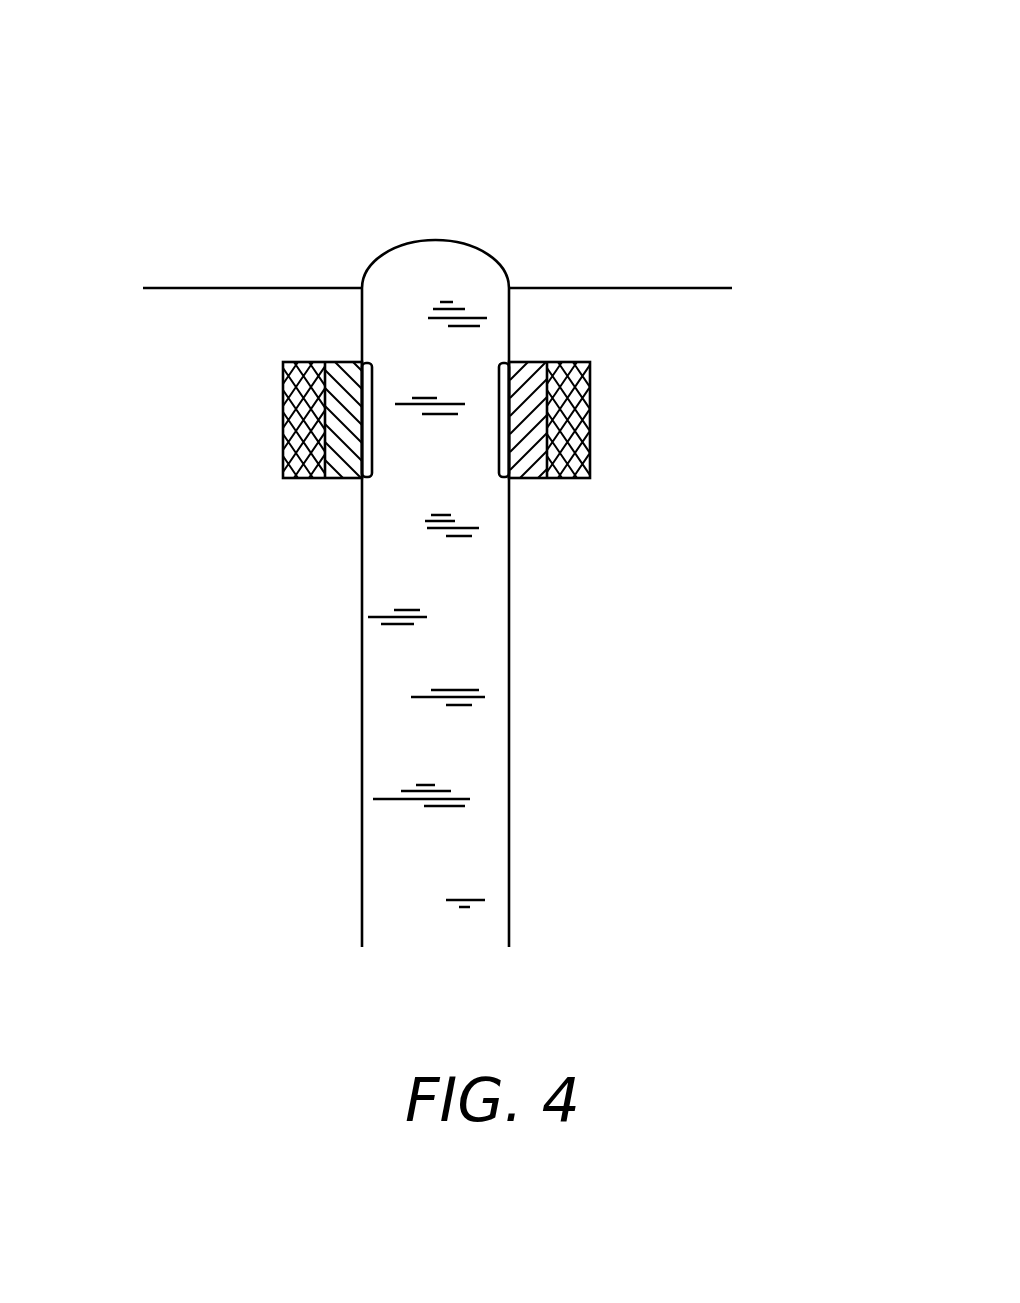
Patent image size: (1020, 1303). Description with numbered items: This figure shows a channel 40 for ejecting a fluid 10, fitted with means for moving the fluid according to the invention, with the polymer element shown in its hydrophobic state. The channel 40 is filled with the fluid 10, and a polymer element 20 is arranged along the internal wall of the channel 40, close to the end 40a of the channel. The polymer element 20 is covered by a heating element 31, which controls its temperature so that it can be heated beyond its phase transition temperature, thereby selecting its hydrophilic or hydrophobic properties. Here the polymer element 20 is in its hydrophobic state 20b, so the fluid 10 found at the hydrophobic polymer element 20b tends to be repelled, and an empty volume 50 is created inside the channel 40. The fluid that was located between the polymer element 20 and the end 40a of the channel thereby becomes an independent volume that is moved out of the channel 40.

The fluid 10 is at (408, 258).
The polymer element 20 is at (216, 337).
The hydrophobic state 20b is at (347, 453).
The heating element 31 is at (297, 398).
The channel 40 is at (530, 501).
The end of the channel 40a is at (513, 347).
The empty volume 50 is at (505, 393).